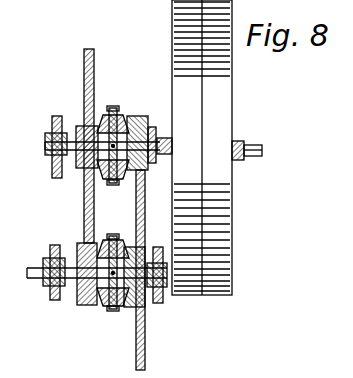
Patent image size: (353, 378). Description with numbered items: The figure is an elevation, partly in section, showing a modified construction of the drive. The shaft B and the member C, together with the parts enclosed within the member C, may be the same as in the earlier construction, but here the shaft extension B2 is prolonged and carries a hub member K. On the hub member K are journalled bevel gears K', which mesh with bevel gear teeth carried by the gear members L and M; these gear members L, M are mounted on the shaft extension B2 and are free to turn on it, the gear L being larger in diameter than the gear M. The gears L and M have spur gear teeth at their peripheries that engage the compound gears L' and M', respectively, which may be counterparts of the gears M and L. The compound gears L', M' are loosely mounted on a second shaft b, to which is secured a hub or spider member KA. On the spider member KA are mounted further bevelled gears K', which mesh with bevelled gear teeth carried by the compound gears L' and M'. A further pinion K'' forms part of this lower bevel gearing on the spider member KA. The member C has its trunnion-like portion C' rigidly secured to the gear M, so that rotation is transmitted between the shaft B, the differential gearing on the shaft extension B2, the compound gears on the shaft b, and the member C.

The member C is at (219, 147).
The trunnion-like portion C' is at (205, 138).
The shaft B is at (258, 156).
The shaft extension B2 is at (58, 178).
The gear member L is at (76, 146).
The compound gear L' is at (73, 264).
The gear member M is at (142, 243).
The compound gear M' is at (143, 257).
The hub member K is at (118, 117).
The bevel gears K' is at (84, 205).
The bevel gear K'' is at (113, 228).
The hub or spider member KA is at (116, 308).
The shaft b is at (45, 287).